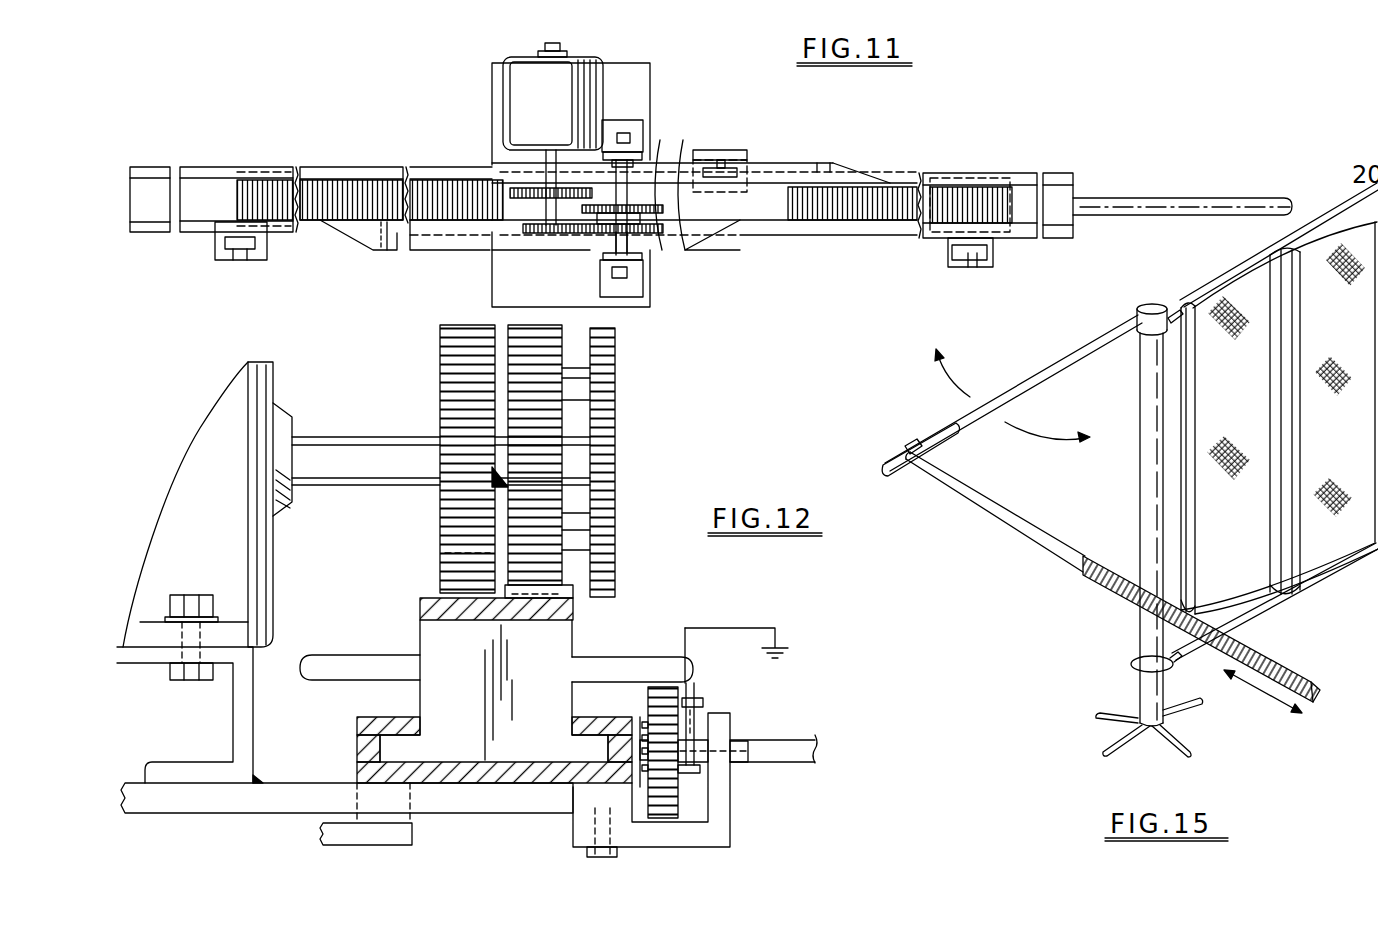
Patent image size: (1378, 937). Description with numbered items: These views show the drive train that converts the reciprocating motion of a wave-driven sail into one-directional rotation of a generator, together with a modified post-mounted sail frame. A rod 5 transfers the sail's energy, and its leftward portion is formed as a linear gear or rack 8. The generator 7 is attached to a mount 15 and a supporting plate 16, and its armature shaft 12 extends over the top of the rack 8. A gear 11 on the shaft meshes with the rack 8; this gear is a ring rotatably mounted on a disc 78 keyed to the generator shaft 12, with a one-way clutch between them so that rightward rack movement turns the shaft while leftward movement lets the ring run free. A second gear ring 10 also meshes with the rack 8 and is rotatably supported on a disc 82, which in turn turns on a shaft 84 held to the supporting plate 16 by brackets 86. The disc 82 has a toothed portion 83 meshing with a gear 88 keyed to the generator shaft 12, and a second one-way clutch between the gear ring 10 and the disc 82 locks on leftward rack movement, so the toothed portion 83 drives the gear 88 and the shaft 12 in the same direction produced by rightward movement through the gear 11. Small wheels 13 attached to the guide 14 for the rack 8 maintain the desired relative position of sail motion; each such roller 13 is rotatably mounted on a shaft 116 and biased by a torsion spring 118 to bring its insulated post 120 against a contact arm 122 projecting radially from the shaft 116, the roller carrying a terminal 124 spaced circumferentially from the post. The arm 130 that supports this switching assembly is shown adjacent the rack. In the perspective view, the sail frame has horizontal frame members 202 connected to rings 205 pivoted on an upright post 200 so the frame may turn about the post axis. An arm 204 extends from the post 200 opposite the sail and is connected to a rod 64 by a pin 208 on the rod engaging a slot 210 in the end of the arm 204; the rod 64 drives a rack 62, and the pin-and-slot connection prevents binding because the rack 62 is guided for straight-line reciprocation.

In FIG. 11, the rod 5 is at (1212, 203).
In FIG. 11, the generator 7 is at (518, 75).
In FIG. 12, the generator 7 is at (177, 505).
In FIG. 11, the linear gear or rack 8 is at (332, 188).
In FIG. 12, the linear gear or rack 8 is at (428, 638).
In FIG. 11, the second gear ring 10 is at (682, 165).
In FIG. 12, the second gear ring 10 is at (525, 323).
In FIG. 11, the gear 11 is at (512, 190).
In FIG. 12, the gear 11 is at (440, 353).
In FIG. 11, the generator shaft 12 is at (206, 99).
In FIG. 12, the generator shaft 12 is at (393, 446).
In FIG. 11, the small wheels 13 is at (253, 260).
In FIG. 12, the small wheels 13 is at (677, 810).
In FIG. 11, the guide 14 is at (1068, 176).
In FIG. 12, the guide 14 is at (481, 787).
In FIG. 12, the mount 15 is at (138, 634).
In FIG. 11, the supporting plate 16 is at (640, 82).
In FIG. 12, the supporting plate 16 is at (285, 790).
In FIG. 15, the supporting plate 16 is at (1286, 380).
In FIG. 15, the rack 62 is at (1113, 587).
In FIG. 15, the rod 64 is at (1047, 532).
In FIG. 12, the disc 78 is at (458, 553).
In FIG. 11, the disc 82 is at (640, 252).
In FIG. 12, the disc 82 is at (580, 366).
In FIG. 11, the toothed portion 83 is at (656, 215).
In FIG. 12, the toothed portion 83 is at (617, 592).
In FIG. 11, the shaft 84 is at (623, 195).
In FIG. 11, the brackets 86 is at (637, 150).
In FIG. 11, the gear 88 is at (567, 234).
In FIG. 12, the gear 88 is at (617, 421).
In FIG. 12, the shaft 116 is at (750, 747).
In FIG. 12, the torsion spring 118 is at (647, 723).
In FIG. 12, the insulated post 120 is at (702, 703).
In FIG. 12, the contact arm 122 is at (697, 695).
In FIG. 12, the terminal 124 is at (697, 775).
In FIG. 11, the arm 130 is at (823, 164).
In FIG. 12, the arm 130 is at (322, 660).
In FIG. 15, the upright post 200 is at (1143, 483).
In FIG. 15, the horizontal frame members 202 is at (1333, 223).
In FIG. 15, the arm 204 is at (1100, 345).
In FIG. 15, the rings 205 is at (1153, 306).
In FIG. 15, the pin 208 is at (917, 443).
In FIG. 15, the slot 210 is at (897, 453).